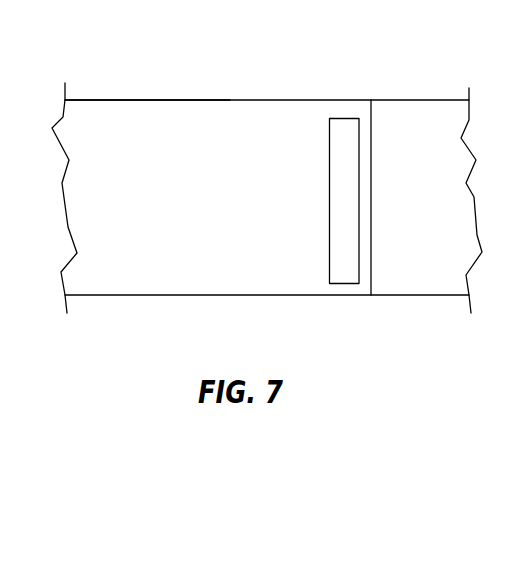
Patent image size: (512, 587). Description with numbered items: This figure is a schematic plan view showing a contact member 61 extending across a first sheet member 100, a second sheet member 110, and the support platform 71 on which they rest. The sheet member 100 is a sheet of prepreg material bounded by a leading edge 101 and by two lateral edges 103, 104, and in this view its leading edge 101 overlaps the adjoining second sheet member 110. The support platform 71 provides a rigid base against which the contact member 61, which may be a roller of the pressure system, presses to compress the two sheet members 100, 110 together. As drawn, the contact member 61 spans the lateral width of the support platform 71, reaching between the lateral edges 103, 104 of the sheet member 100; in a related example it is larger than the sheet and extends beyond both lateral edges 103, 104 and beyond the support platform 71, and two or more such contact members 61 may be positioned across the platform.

The support platform 71 is at (148, 100).
The lateral edge 103 is at (232, 100).
The contact member 61 is at (343, 137).
The leading edge 101 is at (372, 138).
The sheet member 100 is at (183, 257).
The lateral edge 104 is at (286, 295).
The second sheet member 110 is at (418, 273).